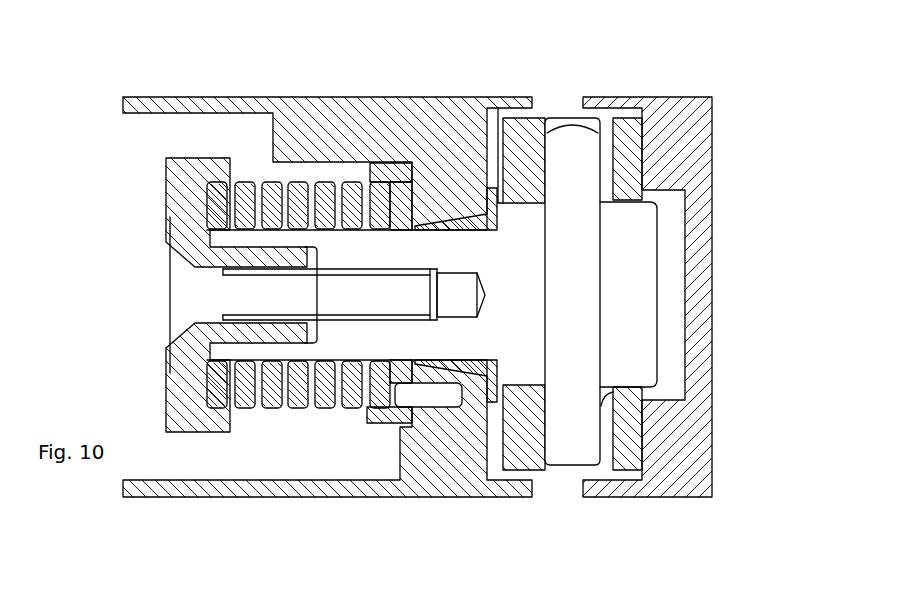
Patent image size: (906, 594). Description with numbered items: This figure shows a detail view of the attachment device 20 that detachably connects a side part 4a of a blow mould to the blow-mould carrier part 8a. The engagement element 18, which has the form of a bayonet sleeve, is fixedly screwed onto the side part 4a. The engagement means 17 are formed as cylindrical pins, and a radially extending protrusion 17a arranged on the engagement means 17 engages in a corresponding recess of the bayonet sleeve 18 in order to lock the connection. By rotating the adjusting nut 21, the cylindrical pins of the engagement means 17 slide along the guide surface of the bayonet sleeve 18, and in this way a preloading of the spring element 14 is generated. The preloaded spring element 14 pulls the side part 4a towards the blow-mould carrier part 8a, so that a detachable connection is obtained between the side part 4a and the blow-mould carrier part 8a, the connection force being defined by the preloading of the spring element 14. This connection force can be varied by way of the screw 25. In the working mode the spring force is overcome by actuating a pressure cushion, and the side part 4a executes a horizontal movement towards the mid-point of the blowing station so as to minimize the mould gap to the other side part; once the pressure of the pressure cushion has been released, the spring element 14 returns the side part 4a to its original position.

The attachment device 20 is at (105, 296).
The adjusting nut 21 is at (182, 203).
The screw 25 is at (265, 290).
The spring element 14 is at (313, 163).
The blow-mould carrier part 8a is at (373, 123).
The engagement element 18 is at (520, 147).
The protrusion 17a is at (573, 167).
The side part 4a is at (663, 170).
The engagement means 17 is at (633, 282).